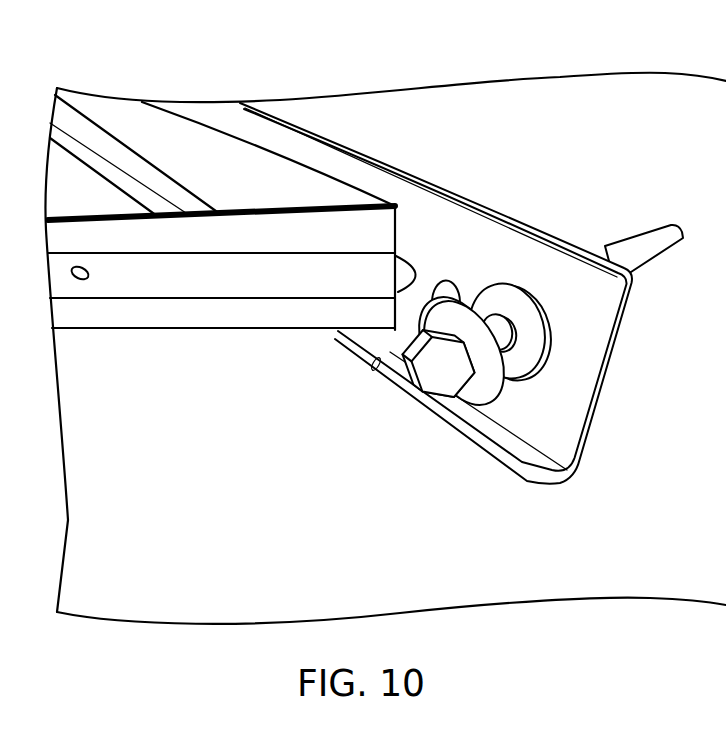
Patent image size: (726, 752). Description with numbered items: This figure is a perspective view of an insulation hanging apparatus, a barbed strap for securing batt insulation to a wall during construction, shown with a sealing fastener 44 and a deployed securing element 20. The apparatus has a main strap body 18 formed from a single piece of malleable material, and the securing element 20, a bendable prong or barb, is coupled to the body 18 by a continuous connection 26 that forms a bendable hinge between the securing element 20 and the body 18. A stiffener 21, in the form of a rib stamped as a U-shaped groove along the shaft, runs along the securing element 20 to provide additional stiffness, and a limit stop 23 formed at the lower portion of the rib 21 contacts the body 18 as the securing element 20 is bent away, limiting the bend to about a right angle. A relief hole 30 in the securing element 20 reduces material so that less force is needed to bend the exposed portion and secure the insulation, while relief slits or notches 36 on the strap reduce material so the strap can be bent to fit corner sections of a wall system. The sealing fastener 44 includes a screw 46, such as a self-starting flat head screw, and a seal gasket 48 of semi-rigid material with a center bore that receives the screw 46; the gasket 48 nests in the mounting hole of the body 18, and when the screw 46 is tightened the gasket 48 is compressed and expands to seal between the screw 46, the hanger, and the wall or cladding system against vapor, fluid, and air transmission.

The main strap body 18 is at (296, 142).
The securing element 20 is at (202, 330).
The stiffener 21 is at (142, 283).
The limit stop 23 is at (412, 268).
The continuous connection 26 is at (392, 306).
The relief hole 30 is at (77, 264).
The relief slit 36 is at (417, 150).
The sealing fastener 44 is at (424, 481).
The screw 46 is at (650, 248).
The seal gasket 48 is at (543, 335).